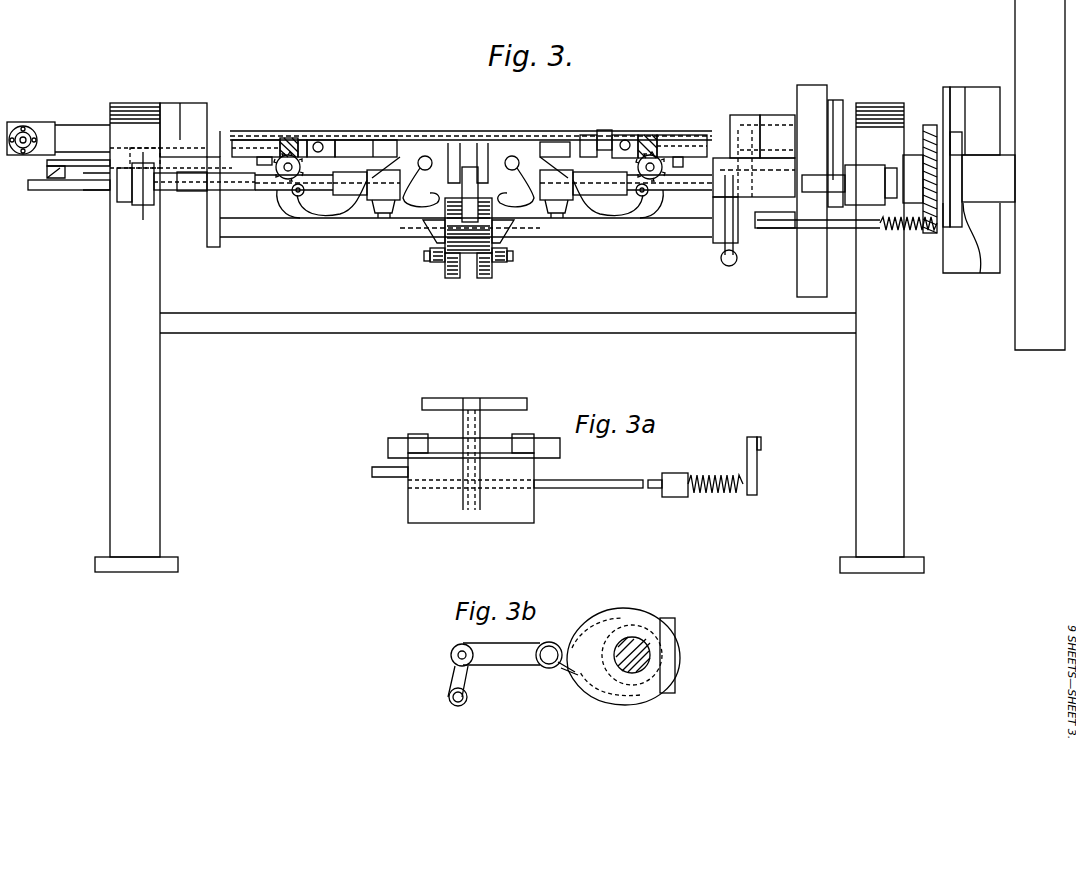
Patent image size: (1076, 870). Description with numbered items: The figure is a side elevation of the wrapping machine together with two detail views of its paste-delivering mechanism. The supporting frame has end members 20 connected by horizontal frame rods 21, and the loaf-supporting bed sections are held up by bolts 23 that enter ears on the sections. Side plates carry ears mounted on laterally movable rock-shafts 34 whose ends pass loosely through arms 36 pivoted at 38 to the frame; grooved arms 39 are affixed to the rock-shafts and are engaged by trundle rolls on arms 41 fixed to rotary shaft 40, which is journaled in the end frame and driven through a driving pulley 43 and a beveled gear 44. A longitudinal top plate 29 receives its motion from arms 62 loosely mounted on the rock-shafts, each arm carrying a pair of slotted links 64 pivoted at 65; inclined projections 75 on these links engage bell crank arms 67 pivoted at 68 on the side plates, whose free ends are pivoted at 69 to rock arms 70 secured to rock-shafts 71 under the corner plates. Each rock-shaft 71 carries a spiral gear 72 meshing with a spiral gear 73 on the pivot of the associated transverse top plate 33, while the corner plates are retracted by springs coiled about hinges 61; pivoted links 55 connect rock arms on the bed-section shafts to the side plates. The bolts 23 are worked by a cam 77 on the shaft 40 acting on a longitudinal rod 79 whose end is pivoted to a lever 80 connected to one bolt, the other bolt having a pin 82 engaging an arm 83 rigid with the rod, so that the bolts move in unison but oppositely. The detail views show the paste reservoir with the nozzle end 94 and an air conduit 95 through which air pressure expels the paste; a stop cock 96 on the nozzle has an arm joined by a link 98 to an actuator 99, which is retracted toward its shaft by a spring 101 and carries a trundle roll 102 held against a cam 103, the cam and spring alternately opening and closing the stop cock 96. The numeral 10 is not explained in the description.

In FIG. 3, the end member 20 is at (509, 338).
In FIG. 3, the horizontal frame rod 21 is at (596, 313).
In FIG. 3, the bolt 23 is at (92, 163).
In FIG. 3, the pivot 38 is at (72, 132).
In FIG. 3, the lever 80 is at (47, 170).
In FIG. 3, the rod 79 is at (75, 192).
In FIG. 3, the arm 36 is at (196, 125).
In FIG. 3, the rock-shaft 34 is at (230, 170).
In FIG. 3, the transverse top plate 33 is at (247, 147).
In FIG. 3, the spiral gear 73 is at (282, 143).
In FIG. 3, the spiral gear 72 is at (495, 137).
In FIG. 3, the hinge 61 is at (320, 142).
In FIG. 3, the longitudinal top plate 29 is at (390, 133).
In FIG. 3, the rock-shaft 71 is at (283, 173).
In FIG. 3, the pivotal connection 69 is at (296, 196).
In FIG. 3, the pivot 68 is at (512, 158).
In FIG. 3, the rock arm 70 is at (668, 176).
In FIG. 3, the bell crank arm 67 is at (336, 215).
In FIG. 3, the inclined projection 75 is at (466, 231).
In FIG. 3, the link 64 is at (432, 253).
In FIG. 3, the pivot 65 is at (437, 258).
In FIG. 3, the arm 62 is at (452, 278).
In FIG. 3, the pivoted link 55 is at (483, 278).
In FIG. 3, the arm 83 is at (738, 208).
In FIG. 3, the pin 82 is at (721, 259).
In FIG. 3, the stop cock 96 is at (786, 229).
In FIG. 3A, the stop cock 96 is at (552, 486).
In FIG. 3B, the stop cock 96 is at (506, 666).
In FIG. 3, the grooved arm 39 is at (820, 100).
In FIG. 3, the arm 41 is at (837, 113).
In FIG. 3, the beveled gear 44 is at (930, 127).
In FIG. 3, the cam 77 is at (983, 95).
In FIG. 3, the cam 103 is at (957, 150).
In FIG. 3B, the cam 103 is at (640, 612).
In FIG. 3, the actuator 99 is at (957, 175).
In FIG. 3A, the actuator 99 is at (761, 439).
In FIG. 3B, the actuator 99 is at (546, 668).
In FIG. 3, the driving pulley 43 is at (1040, 175).
In FIG. 3, the spring 101 is at (913, 228).
In FIG. 3A, the spring 101 is at (724, 493).
In FIG. 3A, the air conduit 95 is at (540, 470).
In FIG. 3A, the nozzle end 94 is at (474, 400).
In FIG. 3A, the link 98 is at (757, 473).
In FIG. 3B, the link 98 is at (452, 680).
In FIG. 3B, the rotary shaft 40 is at (645, 658).
In FIG. 3B, the frame 10 is at (670, 648).
In FIG. 3B, the trundle roll 102 is at (565, 670).